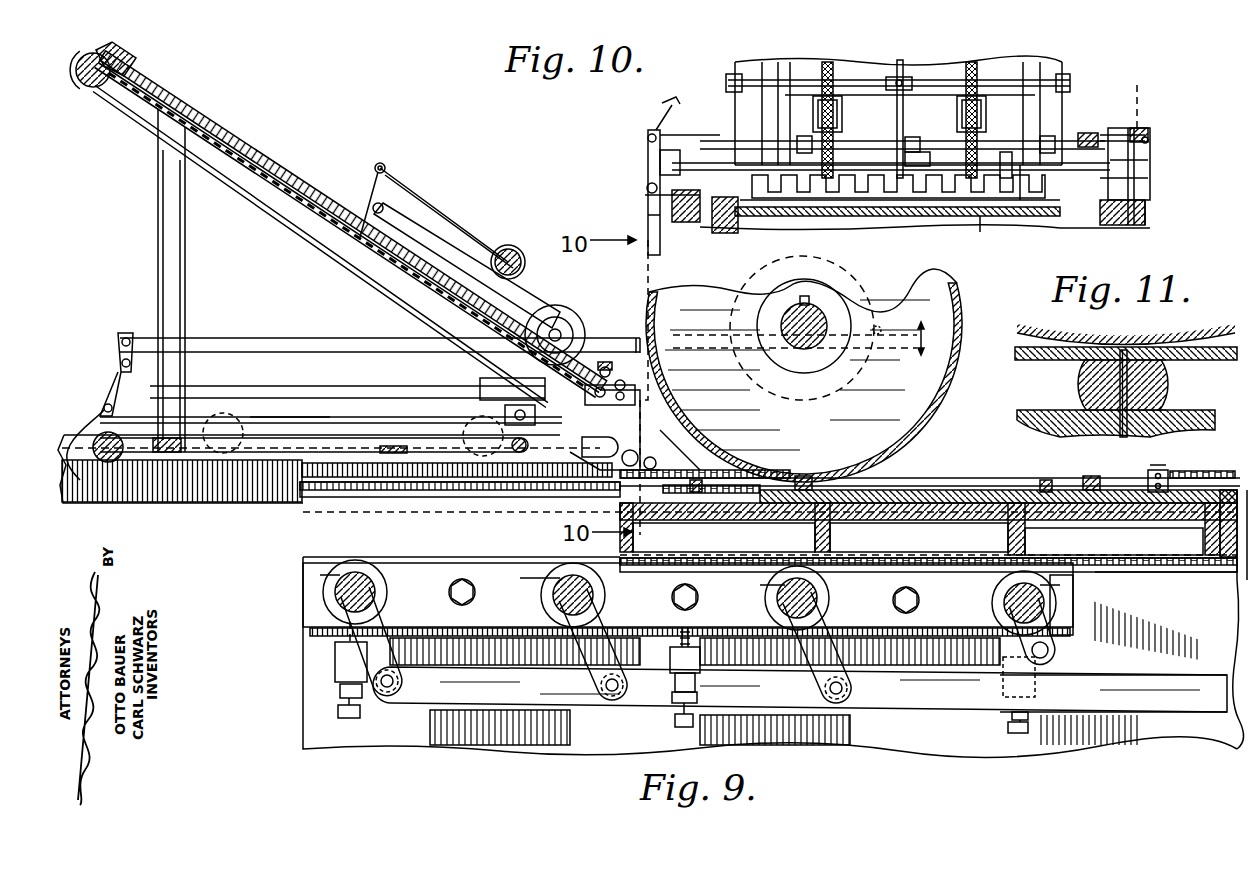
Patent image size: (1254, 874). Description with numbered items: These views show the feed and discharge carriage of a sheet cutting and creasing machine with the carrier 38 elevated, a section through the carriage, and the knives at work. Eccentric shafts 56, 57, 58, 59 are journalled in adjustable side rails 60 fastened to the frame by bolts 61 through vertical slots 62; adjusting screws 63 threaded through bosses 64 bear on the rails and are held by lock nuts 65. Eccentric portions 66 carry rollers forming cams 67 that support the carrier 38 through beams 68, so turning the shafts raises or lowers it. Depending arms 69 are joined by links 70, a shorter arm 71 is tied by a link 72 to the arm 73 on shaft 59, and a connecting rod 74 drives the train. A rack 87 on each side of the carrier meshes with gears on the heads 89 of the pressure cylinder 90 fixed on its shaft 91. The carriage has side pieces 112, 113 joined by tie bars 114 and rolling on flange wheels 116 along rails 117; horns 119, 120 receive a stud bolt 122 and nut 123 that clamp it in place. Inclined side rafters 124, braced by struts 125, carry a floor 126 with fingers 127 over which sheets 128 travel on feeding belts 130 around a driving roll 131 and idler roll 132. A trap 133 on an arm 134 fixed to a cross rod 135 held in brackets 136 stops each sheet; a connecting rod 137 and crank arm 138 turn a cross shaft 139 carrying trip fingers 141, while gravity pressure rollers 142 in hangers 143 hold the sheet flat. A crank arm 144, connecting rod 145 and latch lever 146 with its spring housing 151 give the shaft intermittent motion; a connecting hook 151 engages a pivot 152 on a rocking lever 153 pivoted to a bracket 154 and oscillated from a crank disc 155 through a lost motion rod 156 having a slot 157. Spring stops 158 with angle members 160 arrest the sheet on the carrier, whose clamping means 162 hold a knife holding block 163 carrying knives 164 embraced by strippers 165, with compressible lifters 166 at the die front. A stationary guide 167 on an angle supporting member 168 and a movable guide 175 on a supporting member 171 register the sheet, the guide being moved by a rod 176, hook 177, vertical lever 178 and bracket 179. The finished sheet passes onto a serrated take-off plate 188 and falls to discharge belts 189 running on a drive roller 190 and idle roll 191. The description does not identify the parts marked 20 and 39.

In FIG. 9, the carriage body 20 is at (1160, 760).
In FIG. 9, the carrier 38 is at (1190, 562).
In FIG. 10, the carrier 38 is at (960, 220).
In FIG. 9, the end plate 39 is at (1240, 560).
In FIG. 9, the eccentric shaft 56 is at (330, 590).
In FIG. 9, the eccentric shaft 57 is at (560, 602).
In FIG. 9, the eccentric shaft 58 is at (782, 602).
In FIG. 9, the eccentric shaft 59 is at (1004, 610).
In FIG. 9, the side rails 60 is at (410, 566).
In FIG. 9, the bolts 61 is at (474, 594).
In FIG. 9, the vertical slots 62 is at (463, 579).
In FIG. 9, the adjusting screws 63 is at (340, 713).
In FIG. 9, the bosses 64 is at (336, 664).
In FIG. 9, the lock nuts 65 is at (340, 694).
In FIG. 9, the eccentric portions 66 is at (302, 578).
In FIG. 9, the cams 67 is at (318, 555).
In FIG. 9, the beams 68 is at (1165, 572).
In FIG. 9, the depending arms 69 is at (312, 632).
In FIG. 9, the links 70 is at (420, 686).
In FIG. 9, the additional arm 71 is at (790, 684).
In FIG. 9, the link 72 is at (890, 712).
In FIG. 9, the arm 73 is at (1050, 655).
In FIG. 9, the connecting rod 74 is at (1195, 706).
In FIG. 9, the rack 87 is at (1220, 488).
In FIG. 10, the rack 87 is at (752, 218).
In FIG. 9, the heads 89 is at (935, 355).
In FIG. 9, the pressure cylinder 90 is at (925, 416).
In FIG. 11, the pressure cylinder 90 is at (1022, 334).
In FIG. 9, the shaft 91 is at (798, 305).
In FIG. 10, the horizontal side piece 112 is at (662, 148).
In FIG. 9, the horizontal side piece 113 is at (336, 416).
In FIG. 10, the horizontal side piece 113 is at (1135, 178).
In FIG. 9, the transverse tie bars 114 is at (168, 440).
In FIG. 10, the transverse tie bars 114 is at (775, 215).
In FIG. 9, the flange wheels 116 is at (248, 402).
In FIG. 10, the flange wheels 116 is at (672, 165).
In FIG. 9, the rails 117 is at (222, 500).
In FIG. 10, the rails 117 is at (662, 210).
In FIG. 9, the horn 119 is at (530, 416).
In FIG. 9, the horn 120 is at (605, 492).
In FIG. 9, the stud bolt 122 is at (640, 456).
In FIG. 10, the stud bolt 122 is at (690, 218).
In FIG. 9, the nut 123 is at (658, 465).
In FIG. 10, the nut 123 is at (648, 188).
In FIG. 9, the inclined side rafters 124 is at (110, 54).
In FIG. 10, the inclined side rafters 124 is at (748, 65).
In FIG. 9, the struts 125 is at (158, 270).
In FIG. 9, the floor 126 is at (240, 140).
In FIG. 10, the floor 126 is at (932, 70).
In FIG. 9, the fingers 127 is at (675, 432).
In FIG. 10, the fingers 127 is at (915, 150).
In FIG. 9, the material sheets or cards 128 is at (980, 478).
In FIG. 11, the material sheets or cards 128 is at (1220, 360).
In FIG. 9, the feeding belts 130 is at (150, 82).
In FIG. 10, the feeding belts 130 is at (830, 62).
In FIG. 9, the driving roll 131 is at (95, 94).
In FIG. 9, the idler roll 132 is at (532, 446).
In FIG. 9, the trap 133 is at (374, 170).
In FIG. 9, the arm 134 is at (450, 238).
In FIG. 10, the arm 134 is at (898, 62).
In FIG. 9, the cross rod 135 is at (507, 250).
In FIG. 10, the cross rod 135 is at (1000, 80).
In FIG. 9, the brackets 136 is at (524, 268).
In FIG. 10, the brackets 136 is at (728, 80).
In FIG. 10, the connecting rod 137 is at (905, 98).
In FIG. 9, the crank arm 138 is at (512, 410).
In FIG. 10, the crank arm 138 is at (848, 128).
In FIG. 9, the cross shaft 139 is at (610, 393).
In FIG. 10, the cross shaft 139 is at (1000, 160).
In FIG. 9, the trip fingers 141 is at (622, 400).
In FIG. 10, the trip fingers 141 is at (800, 126).
In FIG. 9, the gravity pressure rollers 142 is at (560, 318).
In FIG. 10, the gravity pressure rollers 142 is at (832, 112).
In FIG. 9, the hangers 143 is at (548, 300).
In FIG. 10, the crank arm 144 is at (1086, 134).
In FIG. 9, the connecting rod 145 is at (400, 392).
In FIG. 10, the connecting rod 145 is at (1108, 135).
In FIG. 9, the latch lever 146 is at (112, 368).
In FIG. 10, the latch lever 146 is at (1150, 147).
In FIG. 9, the connecting hook 151 is at (312, 338).
In FIG. 10, the connecting hook 151 is at (1138, 92).
In FIG. 10, the pivot 152 is at (1150, 132).
In FIG. 9, the rocking lever 153 is at (480, 386).
In FIG. 10, the rocking lever 153 is at (1150, 160).
In FIG. 10, the bracket 154 is at (1145, 210).
In FIG. 9, the crank disc 155 is at (830, 386).
In FIG. 9, the lost motion rod 156 is at (606, 365).
In FIG. 10, the lost motion rod 156 is at (1140, 130).
In FIG. 9, the longitudinal slot 157 is at (620, 378).
In FIG. 9, the spring stops 158 is at (1158, 470).
In FIG. 9, the angle member 160 is at (1148, 480).
In FIG. 9, the clamping means 162 is at (1170, 540).
In FIG. 9, the knife holding block 163 is at (1010, 490).
In FIG. 11, the knife holding block 163 is at (1185, 432).
In FIG. 9, the knives 164 is at (870, 480).
In FIG. 11, the knives 164 is at (1085, 366).
In FIG. 9, the strippers 165 is at (980, 478).
In FIG. 11, the strippers 165 is at (1080, 392).
In FIG. 9, the compressible lifters 166 is at (825, 478).
In FIG. 9, the guide 167 is at (640, 430).
In FIG. 10, the guide 167 is at (1025, 175).
In FIG. 9, the angle supporting member 168 is at (262, 176).
In FIG. 10, the angle supporting member 168 is at (1040, 64).
In FIG. 10, the supporting member 171 is at (765, 60).
In FIG. 10, the movable guide 175 is at (790, 70).
In FIG. 10, the rod 176 is at (678, 128).
In FIG. 10, the hook 177 is at (670, 115).
In FIG. 10, the vertical lever 178 is at (648, 220).
In FIG. 10, the bracket 179 is at (648, 200).
In FIG. 9, the take-off plate 188 is at (596, 442).
In FIG. 10, the take-off plate 188 is at (882, 198).
In FIG. 9, the discharge belts 189 is at (288, 416).
In FIG. 9, the drive roller 190 is at (104, 430).
In FIG. 9, the idle roll 191 is at (520, 500).